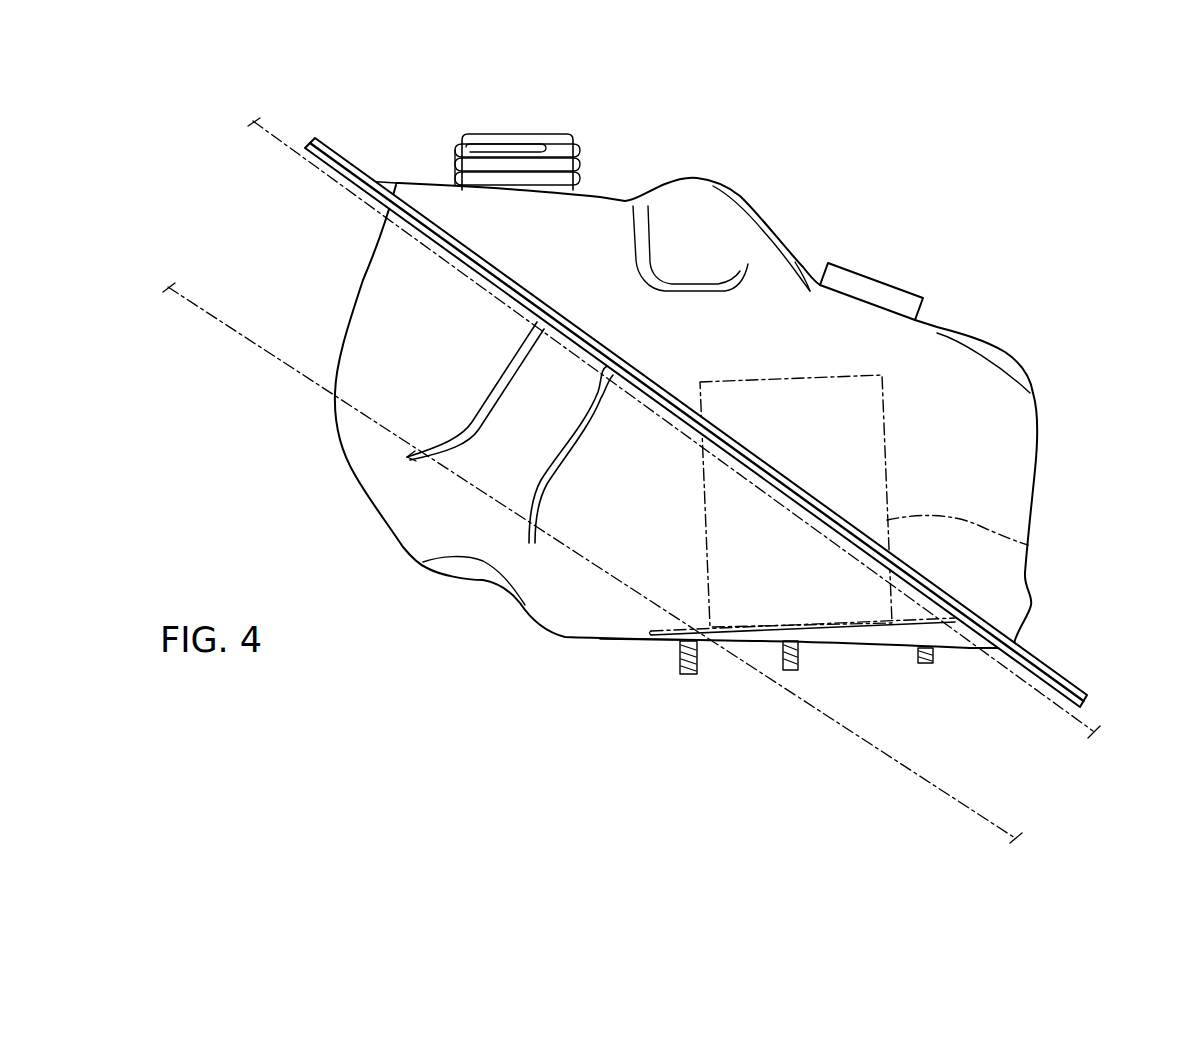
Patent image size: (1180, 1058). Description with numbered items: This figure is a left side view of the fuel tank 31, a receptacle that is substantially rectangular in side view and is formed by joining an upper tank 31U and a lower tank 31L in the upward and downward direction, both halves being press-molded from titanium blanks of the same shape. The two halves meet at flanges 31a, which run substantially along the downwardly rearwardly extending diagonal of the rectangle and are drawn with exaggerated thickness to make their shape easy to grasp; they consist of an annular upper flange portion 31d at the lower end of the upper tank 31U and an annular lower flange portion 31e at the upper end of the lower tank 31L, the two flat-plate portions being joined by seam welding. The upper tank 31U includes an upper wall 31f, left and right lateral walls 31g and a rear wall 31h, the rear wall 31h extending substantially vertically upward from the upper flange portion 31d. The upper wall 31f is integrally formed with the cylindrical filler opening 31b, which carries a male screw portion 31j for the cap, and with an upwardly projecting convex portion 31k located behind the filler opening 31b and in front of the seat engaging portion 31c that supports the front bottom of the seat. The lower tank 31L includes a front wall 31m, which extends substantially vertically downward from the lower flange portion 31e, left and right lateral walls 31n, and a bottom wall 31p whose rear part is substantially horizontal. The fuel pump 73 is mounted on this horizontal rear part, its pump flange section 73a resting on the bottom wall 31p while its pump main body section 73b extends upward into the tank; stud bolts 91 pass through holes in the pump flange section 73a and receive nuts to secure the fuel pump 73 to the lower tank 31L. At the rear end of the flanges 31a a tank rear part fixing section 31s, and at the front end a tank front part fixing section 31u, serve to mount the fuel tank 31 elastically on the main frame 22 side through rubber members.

The main frame 22 is at (275, 128).
The fuel tank 31 is at (908, 194).
The flange 31a is at (340, 139).
The filler opening 31b is at (561, 130).
The seat engaging portion 31c is at (890, 290).
The upper flange portion 31d is at (363, 178).
The lower flange portion 31e is at (357, 200).
The upper wall 31f is at (802, 273).
The lateral wall 31g is at (922, 415).
The rear wall 31h is at (1032, 483).
The male screw portion 31j is at (455, 147).
The convex portion 31k is at (735, 188).
The upper tank 31U is at (677, 167).
The lower tank 31L is at (570, 649).
The front wall 31m is at (338, 435).
The lateral wall 31n is at (620, 545).
The bottom wall 31p is at (642, 652).
The tank rear part fixing section 31s is at (1068, 677).
The tank front part fixing section 31u is at (333, 180).
The fuel pump 73 is at (887, 460).
The pump flange section 73a is at (913, 630).
The pump main body section 73b is at (1033, 547).
The stud bolt 91 is at (688, 676).